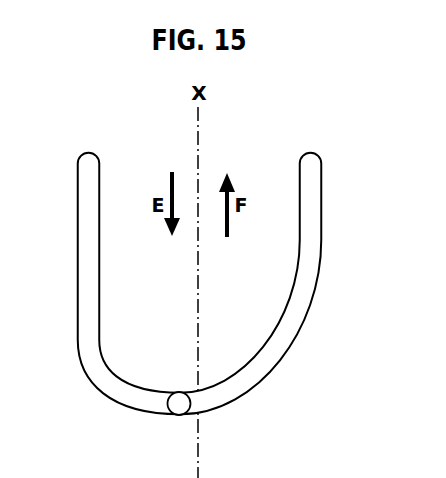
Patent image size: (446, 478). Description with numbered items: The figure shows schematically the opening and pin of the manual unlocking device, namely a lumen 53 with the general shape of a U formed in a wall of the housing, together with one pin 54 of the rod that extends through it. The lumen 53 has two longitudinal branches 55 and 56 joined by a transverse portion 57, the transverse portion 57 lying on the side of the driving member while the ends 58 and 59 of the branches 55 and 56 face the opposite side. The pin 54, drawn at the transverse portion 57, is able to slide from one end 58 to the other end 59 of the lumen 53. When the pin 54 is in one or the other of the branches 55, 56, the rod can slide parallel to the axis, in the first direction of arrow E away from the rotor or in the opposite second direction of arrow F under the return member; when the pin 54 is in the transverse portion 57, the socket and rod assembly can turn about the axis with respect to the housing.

The lumen 53 is at (268, 358).
The pin 54 is at (176, 414).
The longitudinal branch 55 is at (88, 213).
The longitudinal branch 56 is at (310, 215).
The transverse portion 57 is at (118, 385).
The end of branch 58 is at (88, 151).
The end of branch 59 is at (310, 151).